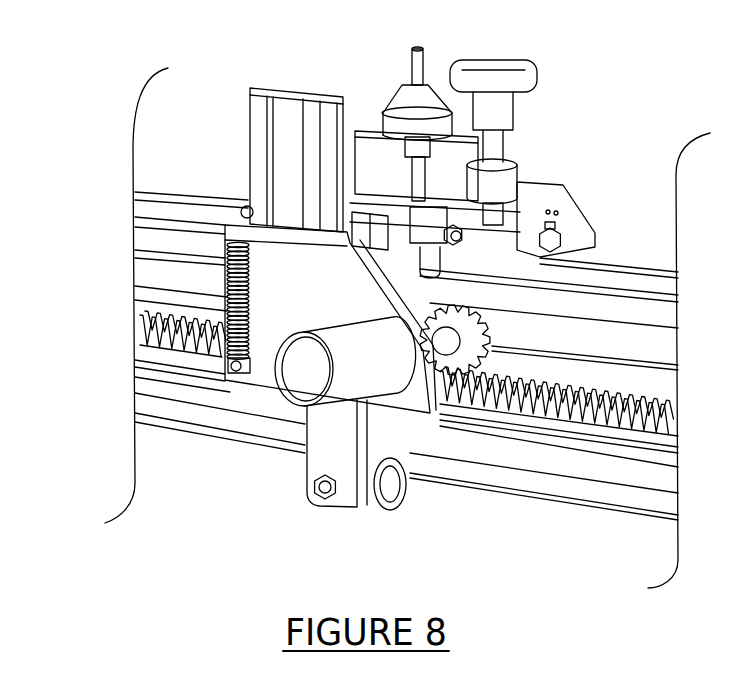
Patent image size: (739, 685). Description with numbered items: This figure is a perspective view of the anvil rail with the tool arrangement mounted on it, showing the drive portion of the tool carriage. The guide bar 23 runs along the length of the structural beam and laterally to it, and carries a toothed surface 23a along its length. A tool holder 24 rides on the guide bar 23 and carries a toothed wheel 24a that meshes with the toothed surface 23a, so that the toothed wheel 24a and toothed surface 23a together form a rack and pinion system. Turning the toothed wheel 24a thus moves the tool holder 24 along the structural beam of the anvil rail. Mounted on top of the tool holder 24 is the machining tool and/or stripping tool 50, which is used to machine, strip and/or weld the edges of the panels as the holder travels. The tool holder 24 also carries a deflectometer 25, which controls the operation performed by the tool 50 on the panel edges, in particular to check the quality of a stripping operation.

The guide bar 23 is at (242, 420).
The toothed surface 23a is at (587, 403).
The tool holder 24 is at (278, 295).
The toothed wheel 24a is at (480, 352).
The deflectometer 25 is at (491, 66).
The machining tool and/or stripping tool 50 is at (390, 90).